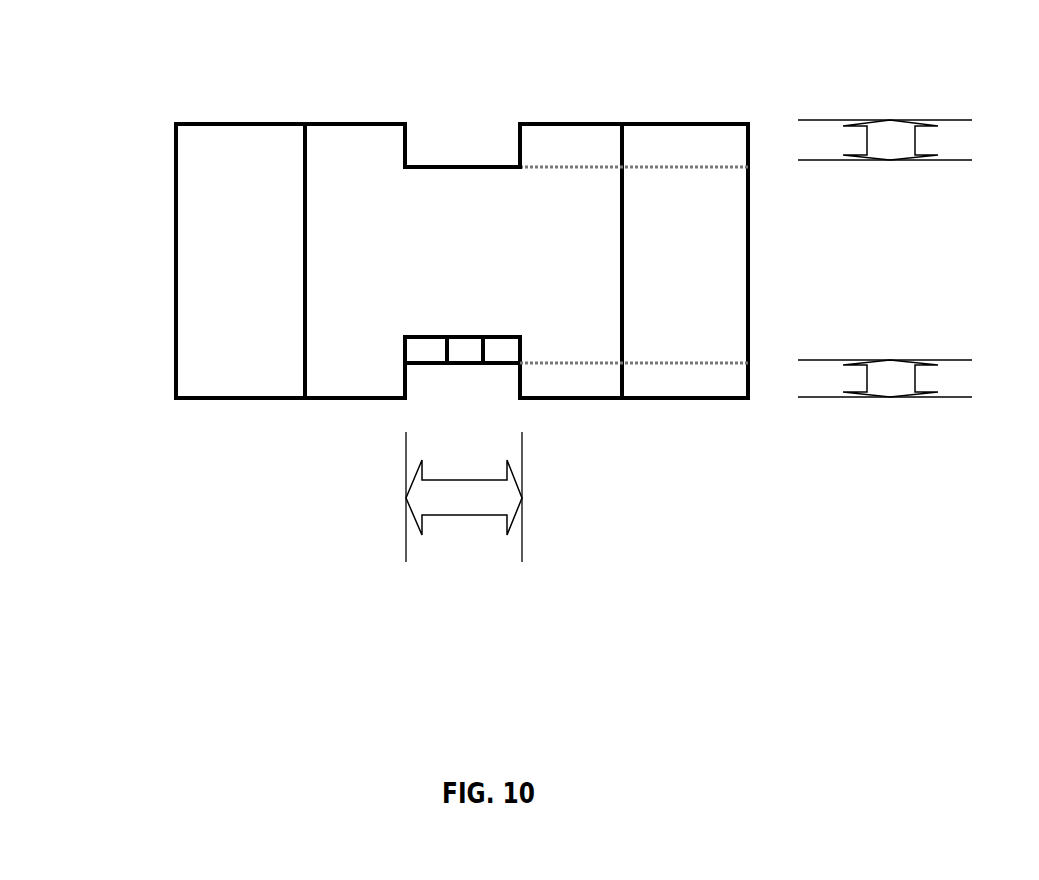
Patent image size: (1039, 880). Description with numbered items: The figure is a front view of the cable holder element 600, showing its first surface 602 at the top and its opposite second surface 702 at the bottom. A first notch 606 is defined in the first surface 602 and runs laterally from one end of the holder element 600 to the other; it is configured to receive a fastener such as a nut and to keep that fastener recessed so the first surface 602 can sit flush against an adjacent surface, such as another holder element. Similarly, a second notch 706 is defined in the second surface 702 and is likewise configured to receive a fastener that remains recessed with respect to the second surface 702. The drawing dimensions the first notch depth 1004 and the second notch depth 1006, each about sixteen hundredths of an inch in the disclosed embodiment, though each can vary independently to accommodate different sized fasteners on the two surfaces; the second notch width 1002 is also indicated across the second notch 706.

The holder element 600 is at (797, 85).
The first surface 602 is at (669, 113).
The first notch 606 is at (465, 163).
The second surface 702 is at (661, 405).
The second notch 706 is at (458, 365).
The second notch width SNW 1002 is at (460, 515).
The first notch depth 1004 is at (915, 140).
The second notch depth 1006 is at (915, 378).